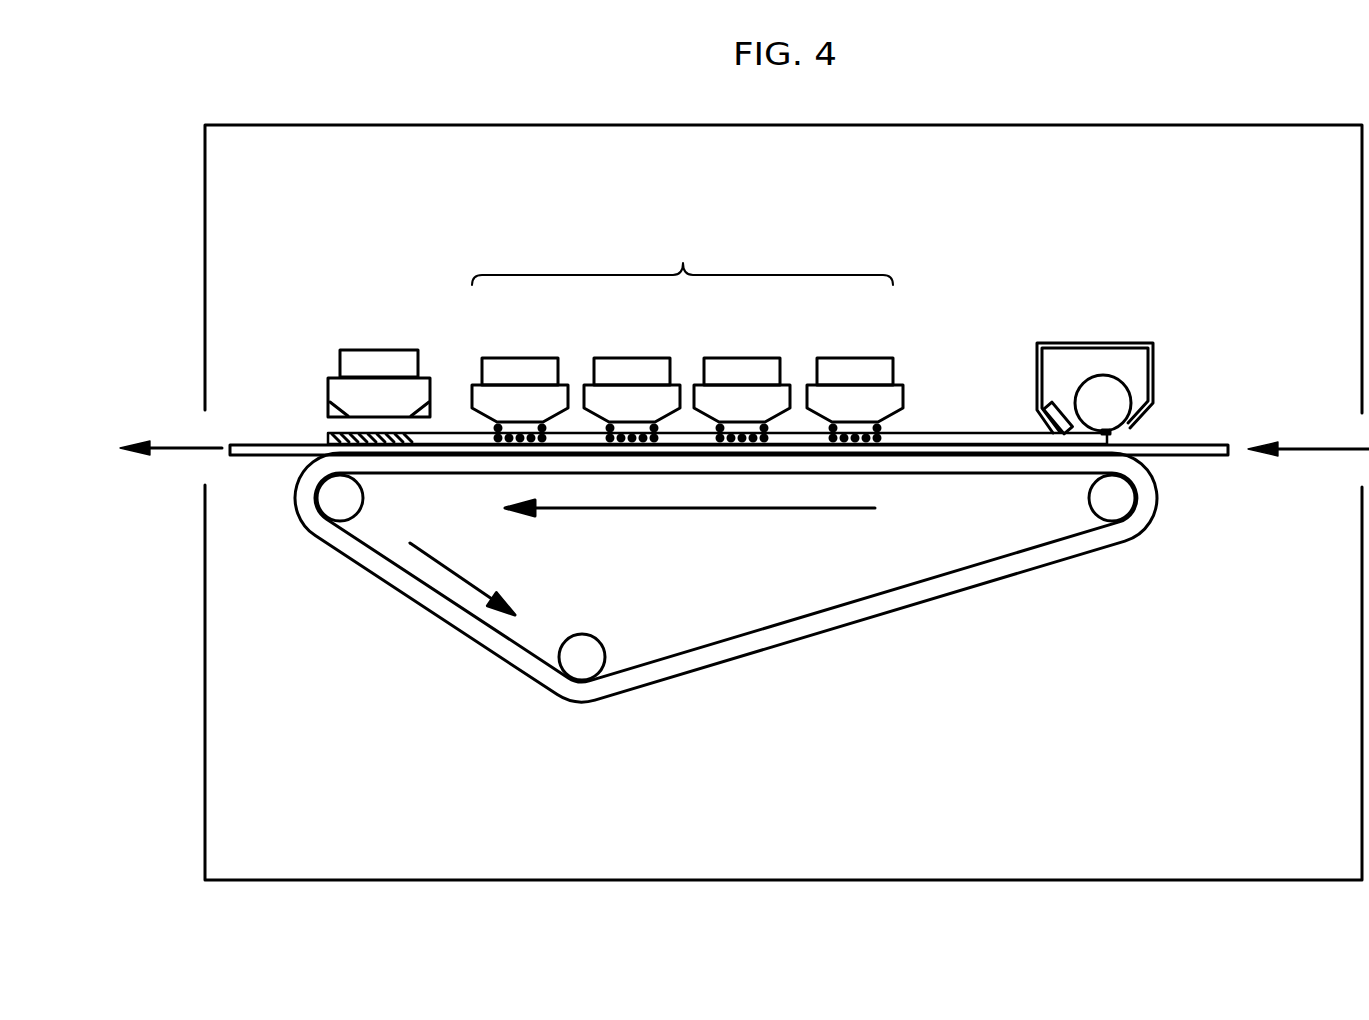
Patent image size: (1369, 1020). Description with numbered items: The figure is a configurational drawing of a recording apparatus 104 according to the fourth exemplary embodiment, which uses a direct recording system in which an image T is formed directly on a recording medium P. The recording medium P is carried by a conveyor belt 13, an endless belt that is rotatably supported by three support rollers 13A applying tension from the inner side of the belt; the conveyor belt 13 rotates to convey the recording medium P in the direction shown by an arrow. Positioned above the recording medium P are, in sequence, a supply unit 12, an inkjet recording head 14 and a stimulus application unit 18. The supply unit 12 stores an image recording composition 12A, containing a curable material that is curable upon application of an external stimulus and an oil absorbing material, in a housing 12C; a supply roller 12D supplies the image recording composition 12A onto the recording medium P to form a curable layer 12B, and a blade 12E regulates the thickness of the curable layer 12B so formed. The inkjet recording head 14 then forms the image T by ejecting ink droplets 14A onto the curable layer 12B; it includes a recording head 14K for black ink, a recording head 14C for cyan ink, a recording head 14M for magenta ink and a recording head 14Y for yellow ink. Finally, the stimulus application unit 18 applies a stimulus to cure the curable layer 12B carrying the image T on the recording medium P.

The recording apparatus 104 is at (158, 252).
The stimulus application unit 18 is at (392, 350).
The image T is at (345, 433).
The inkjet recording head 14 is at (687, 334).
The recording head 14Y is at (519, 352).
The recording head 14M is at (631, 352).
The recording head 14C is at (741, 352).
The recording head 14K is at (854, 352).
The ink droplets 14A is at (689, 401).
The supply unit 12 is at (1109, 335).
The image recording composition 12A is at (1112, 352).
The curable layer 12B is at (1003, 440).
The housing 12C is at (1135, 383).
The supply roller 12D is at (1120, 435).
The blade 12E is at (1063, 403).
The conveyor belt 13 is at (741, 577).
The support rollers 13A is at (360, 497).
The recording medium P is at (1217, 457).